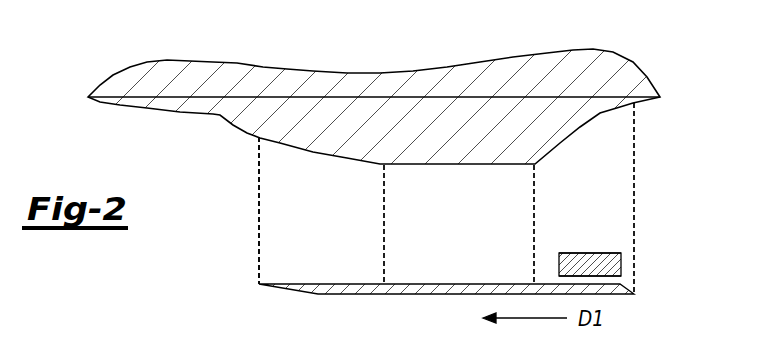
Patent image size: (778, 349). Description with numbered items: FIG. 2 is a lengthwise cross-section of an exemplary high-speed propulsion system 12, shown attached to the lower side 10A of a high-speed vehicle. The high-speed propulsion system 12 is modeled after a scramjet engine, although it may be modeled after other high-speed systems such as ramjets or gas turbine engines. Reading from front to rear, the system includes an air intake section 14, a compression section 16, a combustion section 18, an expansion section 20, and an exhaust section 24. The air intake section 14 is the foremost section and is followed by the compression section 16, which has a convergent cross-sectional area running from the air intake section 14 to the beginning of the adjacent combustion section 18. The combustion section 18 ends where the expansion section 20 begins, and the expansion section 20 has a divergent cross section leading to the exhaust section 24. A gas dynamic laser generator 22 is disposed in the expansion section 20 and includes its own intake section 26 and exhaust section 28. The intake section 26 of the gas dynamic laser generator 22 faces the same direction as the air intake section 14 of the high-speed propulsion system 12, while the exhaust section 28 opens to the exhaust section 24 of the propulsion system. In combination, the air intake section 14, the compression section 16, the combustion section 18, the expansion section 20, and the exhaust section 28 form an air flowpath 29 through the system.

The lower side 10A is at (583, 50).
The high-speed propulsion system 12 is at (293, 296).
The air intake section 14 is at (259, 238).
The compression section 16 is at (329, 230).
The combustion section 18 is at (467, 241).
The expansion section 20 is at (594, 200).
The gas dynamic laser generator 22 is at (622, 272).
The exhaust section 24 is at (636, 163).
The intake section 26 is at (559, 257).
The exhaust section 28 is at (622, 256).
The air flowpath 29 is at (259, 211).